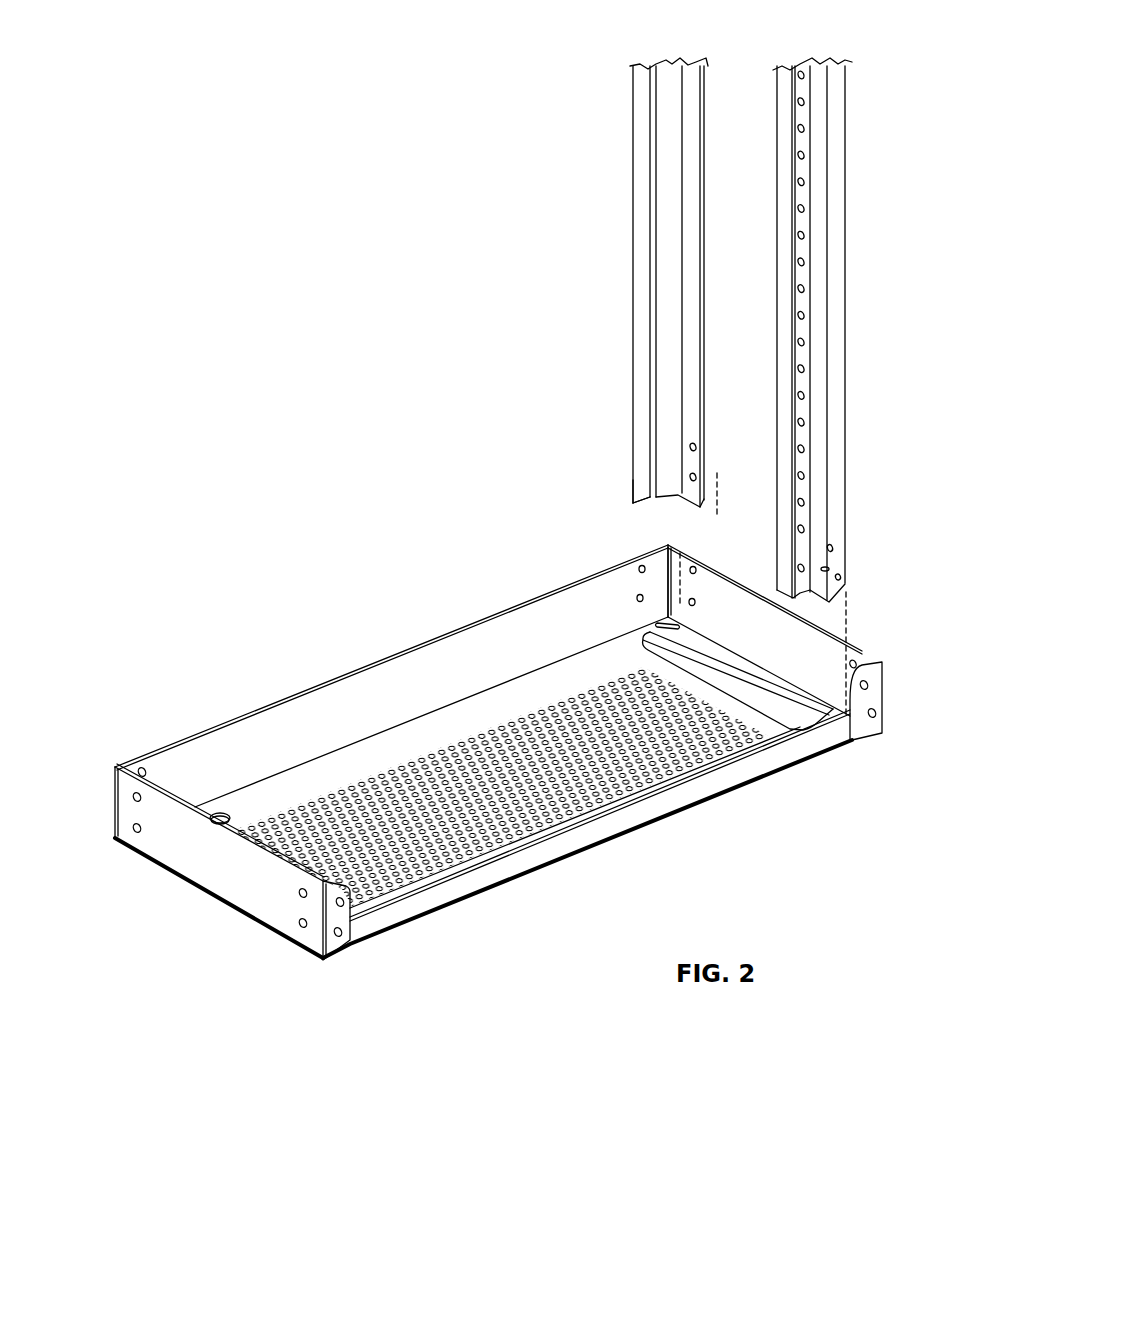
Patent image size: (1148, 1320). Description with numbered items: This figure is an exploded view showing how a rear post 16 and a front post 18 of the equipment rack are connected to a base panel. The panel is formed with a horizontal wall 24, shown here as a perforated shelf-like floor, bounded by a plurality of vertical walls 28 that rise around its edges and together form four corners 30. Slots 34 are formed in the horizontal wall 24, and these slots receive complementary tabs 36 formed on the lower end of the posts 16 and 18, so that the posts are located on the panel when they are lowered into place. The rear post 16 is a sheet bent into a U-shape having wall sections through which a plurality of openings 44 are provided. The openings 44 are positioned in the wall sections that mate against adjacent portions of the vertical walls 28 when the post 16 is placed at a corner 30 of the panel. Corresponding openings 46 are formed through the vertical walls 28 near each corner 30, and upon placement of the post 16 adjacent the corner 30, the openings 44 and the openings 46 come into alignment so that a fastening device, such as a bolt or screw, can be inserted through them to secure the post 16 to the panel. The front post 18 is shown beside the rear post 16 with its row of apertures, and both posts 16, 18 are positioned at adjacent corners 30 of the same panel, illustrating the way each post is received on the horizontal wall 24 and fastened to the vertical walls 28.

The post 16 is at (638, 328).
The post 18 is at (847, 362).
The horizontal wall 24 is at (343, 770).
The vertical walls 28 is at (200, 737).
The corners 30 is at (668, 547).
The slots 34 is at (643, 633).
The tabs 36 is at (634, 508).
The openings 44 is at (697, 446).
The openings 46 is at (638, 597).